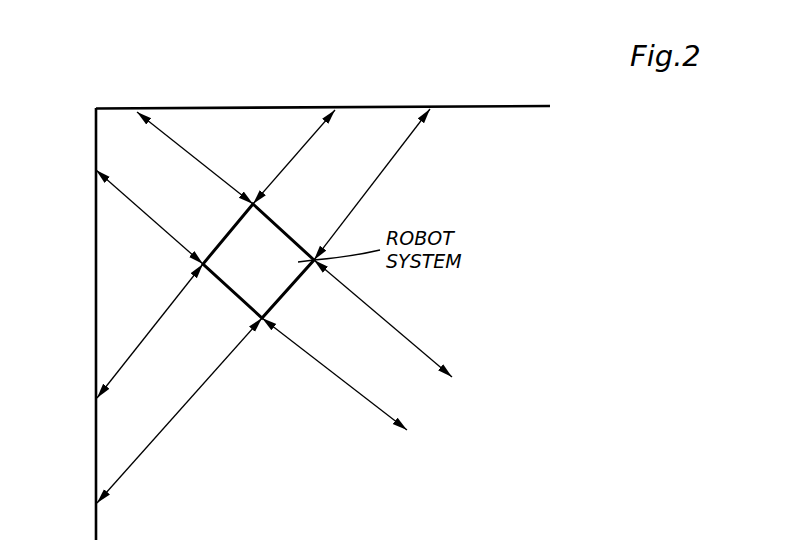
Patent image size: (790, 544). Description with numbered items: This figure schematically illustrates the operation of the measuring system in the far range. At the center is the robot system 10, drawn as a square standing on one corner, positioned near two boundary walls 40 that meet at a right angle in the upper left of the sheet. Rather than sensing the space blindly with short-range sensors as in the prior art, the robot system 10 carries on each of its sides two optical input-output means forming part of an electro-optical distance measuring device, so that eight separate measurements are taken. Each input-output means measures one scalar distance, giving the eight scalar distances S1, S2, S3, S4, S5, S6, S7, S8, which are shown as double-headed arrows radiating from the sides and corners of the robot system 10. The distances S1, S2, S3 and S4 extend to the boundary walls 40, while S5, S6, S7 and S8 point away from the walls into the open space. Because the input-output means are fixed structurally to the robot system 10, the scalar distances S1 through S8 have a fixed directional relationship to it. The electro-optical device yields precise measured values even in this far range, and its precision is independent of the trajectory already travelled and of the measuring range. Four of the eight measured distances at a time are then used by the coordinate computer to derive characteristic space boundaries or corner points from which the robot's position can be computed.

The robot system 10 is at (287, 230).
The wall / boundary 40 is at (96, 338).
The scalar distance s1 S1 is at (149, 217).
The scalar distance s2 S2 is at (195, 158).
The scalar distance s3 S3 is at (294, 157).
The scalar distance s4 S4 is at (372, 184).
The scalar distance s5 S5 is at (383, 318).
The scalar distance s6 S6 is at (334, 374).
The scalar distance s7 S7 is at (179, 410).
The scalar distance s8 S8 is at (150, 331).